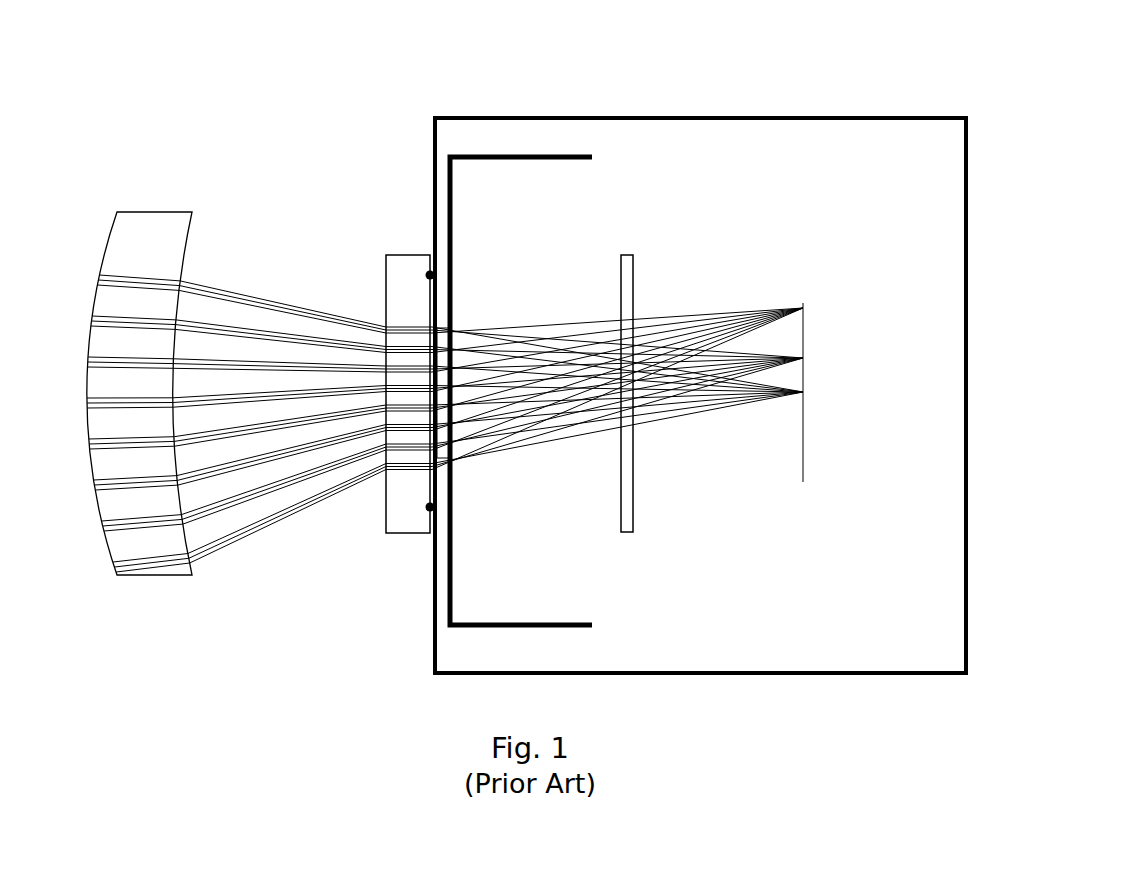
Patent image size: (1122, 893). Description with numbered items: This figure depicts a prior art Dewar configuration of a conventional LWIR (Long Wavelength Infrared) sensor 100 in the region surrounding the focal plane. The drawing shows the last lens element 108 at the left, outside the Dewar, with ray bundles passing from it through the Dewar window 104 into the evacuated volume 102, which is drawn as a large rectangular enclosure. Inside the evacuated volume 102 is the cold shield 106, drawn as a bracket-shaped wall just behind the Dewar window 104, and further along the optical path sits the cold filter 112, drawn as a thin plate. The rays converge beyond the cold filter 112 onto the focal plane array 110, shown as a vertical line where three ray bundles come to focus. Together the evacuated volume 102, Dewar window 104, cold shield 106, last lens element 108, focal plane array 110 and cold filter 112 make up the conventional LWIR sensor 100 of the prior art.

The conventional LWIR sensor 100 is at (1002, 90).
The evacuated volume 102 is at (948, 207).
The Dewar window 104 is at (402, 257).
The cold shield 106 is at (523, 155).
The last lens element 108 is at (162, 212).
The focal plane array 110 is at (803, 437).
The cold filter 112 is at (627, 533).